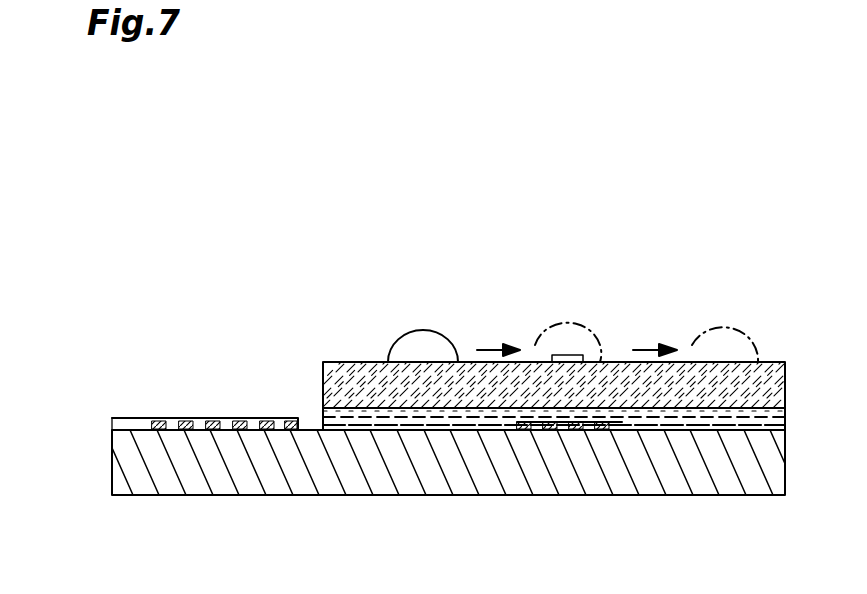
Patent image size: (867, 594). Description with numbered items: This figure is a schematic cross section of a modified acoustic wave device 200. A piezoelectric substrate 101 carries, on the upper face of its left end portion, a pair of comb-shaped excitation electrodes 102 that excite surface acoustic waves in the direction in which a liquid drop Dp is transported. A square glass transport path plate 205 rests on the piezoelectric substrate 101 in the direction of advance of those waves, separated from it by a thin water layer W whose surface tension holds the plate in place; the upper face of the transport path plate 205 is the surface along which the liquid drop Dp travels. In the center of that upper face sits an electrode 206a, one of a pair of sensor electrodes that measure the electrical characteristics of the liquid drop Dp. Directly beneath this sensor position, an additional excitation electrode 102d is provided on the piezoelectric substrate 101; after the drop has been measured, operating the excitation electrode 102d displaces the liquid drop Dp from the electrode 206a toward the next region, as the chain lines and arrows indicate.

The piezoelectric substrate 101 is at (112, 456).
The excitation electrodes 102 is at (157, 418).
The excitation electrode 102d is at (620, 424).
The acoustic wave device 200 is at (292, 363).
The transport path plate 205 is at (340, 362).
The electrode 206a is at (565, 355).
The liquid drop Dp is at (424, 330).
The water layer W is at (786, 417).